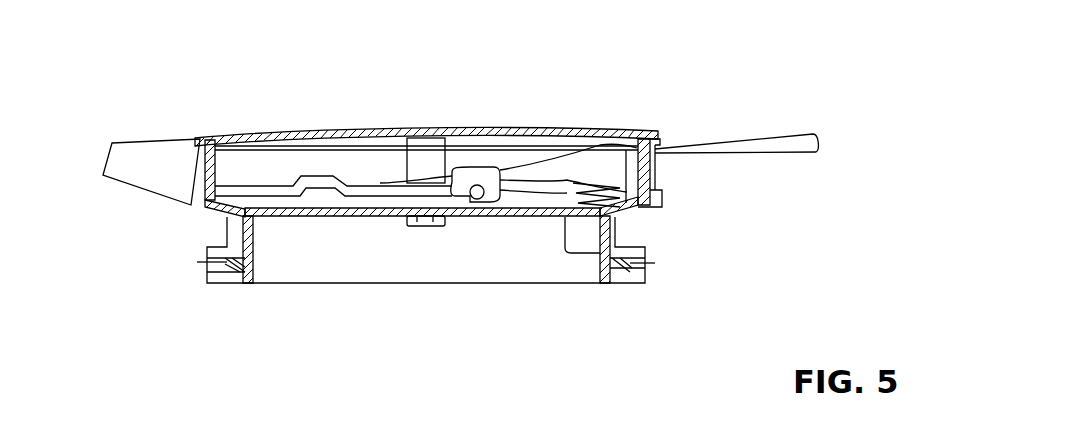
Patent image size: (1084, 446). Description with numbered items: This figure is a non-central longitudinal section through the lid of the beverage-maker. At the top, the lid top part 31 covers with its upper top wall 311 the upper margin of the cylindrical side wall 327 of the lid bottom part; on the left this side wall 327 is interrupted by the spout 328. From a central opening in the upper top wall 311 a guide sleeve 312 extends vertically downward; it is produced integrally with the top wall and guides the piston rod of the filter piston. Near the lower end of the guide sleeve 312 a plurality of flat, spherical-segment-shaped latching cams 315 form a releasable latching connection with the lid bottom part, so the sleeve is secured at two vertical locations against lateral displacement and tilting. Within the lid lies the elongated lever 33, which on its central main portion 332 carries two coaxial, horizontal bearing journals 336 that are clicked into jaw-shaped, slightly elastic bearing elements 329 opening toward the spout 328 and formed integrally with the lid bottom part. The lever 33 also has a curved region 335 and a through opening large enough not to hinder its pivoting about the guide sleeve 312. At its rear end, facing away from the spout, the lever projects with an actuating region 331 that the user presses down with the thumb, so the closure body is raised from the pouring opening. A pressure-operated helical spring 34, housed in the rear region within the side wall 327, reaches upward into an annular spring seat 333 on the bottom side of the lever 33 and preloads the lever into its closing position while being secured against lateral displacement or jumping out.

The lid top part 31 is at (269, 105).
The upper top wall 311 is at (361, 128).
The guide sleeve 312 is at (425, 152).
The latching cam 315 is at (416, 217).
The side wall 327 is at (210, 172).
The spout 328 is at (150, 178).
The bearing element 329 is at (497, 166).
The lever 33 is at (689, 132).
The actuating region 331 is at (763, 146).
The main portion 332 is at (537, 178).
The spring seat 333 is at (615, 170).
The helical spring 34 is at (610, 210).
The curved region 335 is at (312, 188).
The bearing journal 336 is at (468, 198).